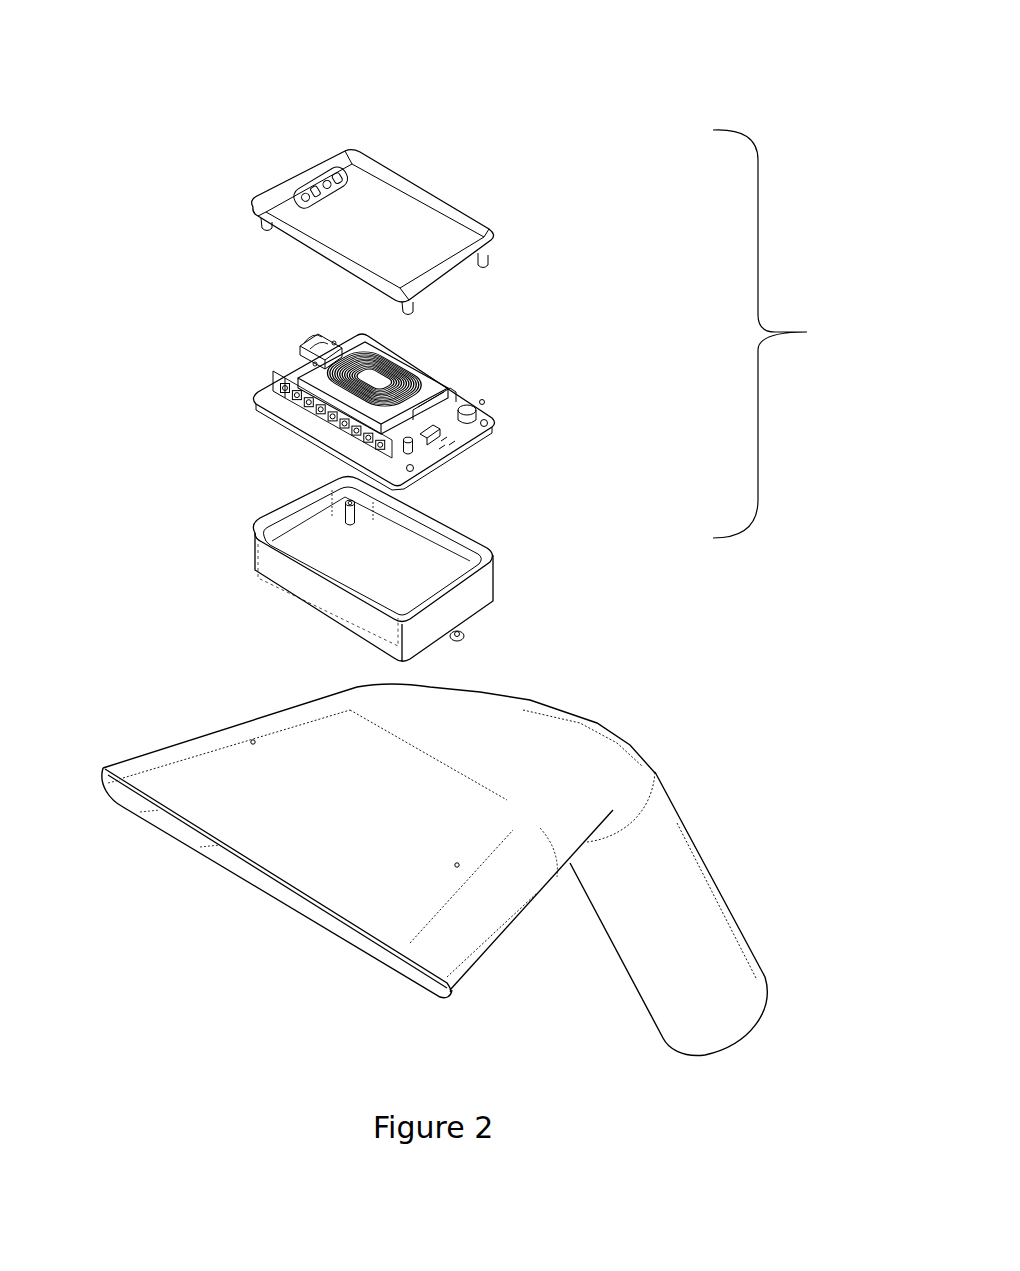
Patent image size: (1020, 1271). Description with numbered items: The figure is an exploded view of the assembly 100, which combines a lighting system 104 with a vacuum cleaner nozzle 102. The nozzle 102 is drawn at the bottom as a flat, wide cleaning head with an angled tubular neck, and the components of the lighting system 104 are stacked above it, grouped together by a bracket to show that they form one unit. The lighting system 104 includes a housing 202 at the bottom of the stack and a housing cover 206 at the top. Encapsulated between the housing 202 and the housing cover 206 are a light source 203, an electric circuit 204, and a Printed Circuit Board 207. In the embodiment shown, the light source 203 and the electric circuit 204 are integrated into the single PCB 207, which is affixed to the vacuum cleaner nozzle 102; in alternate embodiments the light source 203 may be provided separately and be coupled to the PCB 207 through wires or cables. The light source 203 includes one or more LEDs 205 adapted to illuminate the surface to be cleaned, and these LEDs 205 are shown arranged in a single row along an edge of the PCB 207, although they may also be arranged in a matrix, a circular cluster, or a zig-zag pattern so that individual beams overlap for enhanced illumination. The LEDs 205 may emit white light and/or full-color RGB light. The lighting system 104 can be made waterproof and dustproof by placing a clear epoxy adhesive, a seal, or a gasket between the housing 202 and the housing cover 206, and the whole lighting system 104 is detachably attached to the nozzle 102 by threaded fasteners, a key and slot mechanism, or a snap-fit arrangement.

The assembly 100 is at (116, 109).
The vacuum cleaner nozzle 102 is at (602, 748).
The lighting system 104 is at (790, 334).
The housing 202 is at (410, 585).
The light source 203 is at (220, 346).
The electric circuit 204 is at (484, 370).
The LEDs 205 is at (320, 410).
The housing cover 206 is at (458, 233).
The Printed Circuit Board (PCB) 207 is at (425, 453).